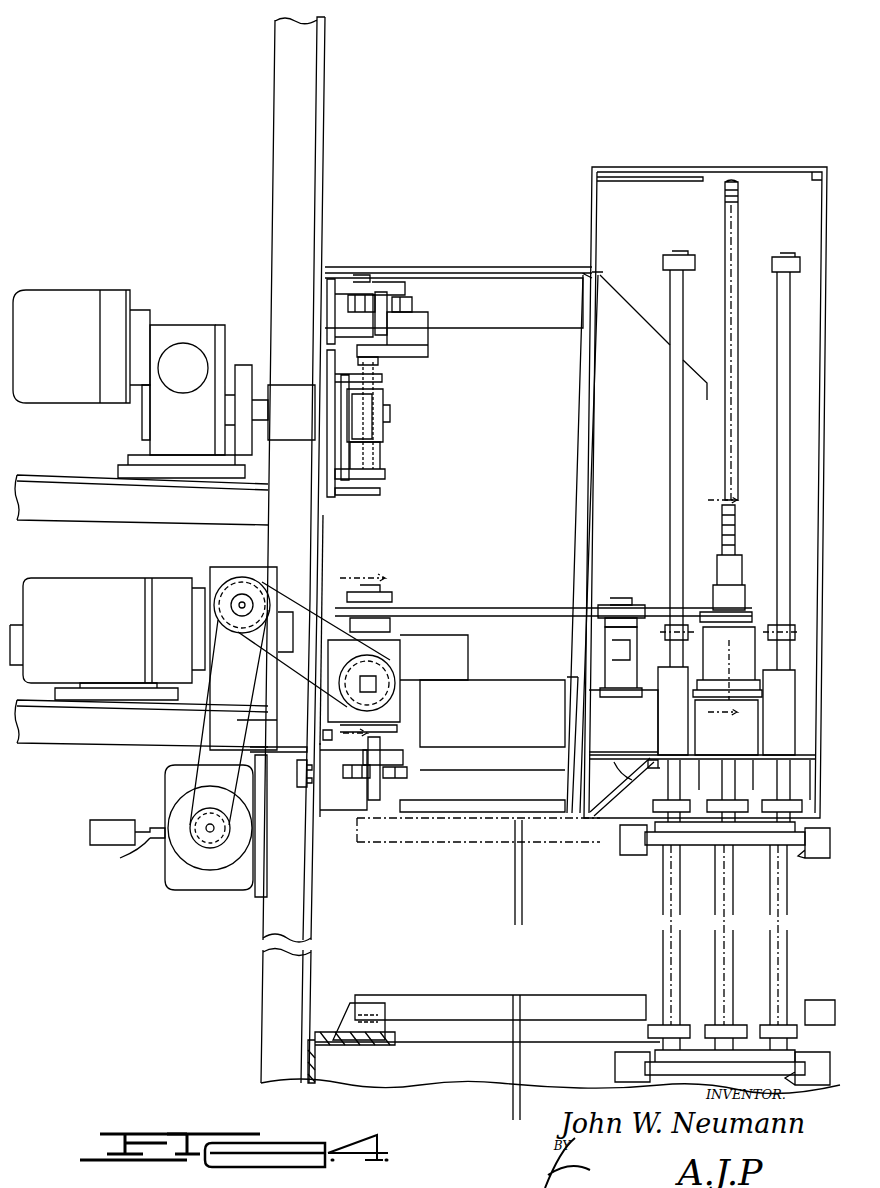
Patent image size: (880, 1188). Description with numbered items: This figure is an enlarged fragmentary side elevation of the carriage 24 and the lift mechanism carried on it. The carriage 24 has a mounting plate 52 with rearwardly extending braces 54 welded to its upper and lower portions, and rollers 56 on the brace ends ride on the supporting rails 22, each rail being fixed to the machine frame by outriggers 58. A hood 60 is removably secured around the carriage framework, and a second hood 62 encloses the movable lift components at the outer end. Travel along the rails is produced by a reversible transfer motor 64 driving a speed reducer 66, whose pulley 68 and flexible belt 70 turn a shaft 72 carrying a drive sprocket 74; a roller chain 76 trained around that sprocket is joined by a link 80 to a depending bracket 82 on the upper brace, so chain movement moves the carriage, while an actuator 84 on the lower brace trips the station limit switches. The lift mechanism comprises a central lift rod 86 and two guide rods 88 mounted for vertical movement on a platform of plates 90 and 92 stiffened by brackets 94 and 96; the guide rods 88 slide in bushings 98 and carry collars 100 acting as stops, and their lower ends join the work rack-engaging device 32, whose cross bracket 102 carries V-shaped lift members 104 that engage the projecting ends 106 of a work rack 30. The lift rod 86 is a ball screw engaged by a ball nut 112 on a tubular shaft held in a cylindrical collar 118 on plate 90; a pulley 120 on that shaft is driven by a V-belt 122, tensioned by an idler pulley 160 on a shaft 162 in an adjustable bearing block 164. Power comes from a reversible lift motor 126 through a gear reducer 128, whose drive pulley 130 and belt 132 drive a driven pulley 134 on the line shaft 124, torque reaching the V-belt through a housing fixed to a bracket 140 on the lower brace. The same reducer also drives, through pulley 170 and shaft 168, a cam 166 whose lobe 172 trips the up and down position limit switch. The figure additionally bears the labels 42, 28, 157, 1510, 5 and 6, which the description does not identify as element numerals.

The column 42 is at (305, 87).
The second hood 62 is at (753, 167).
The hood 60 is at (525, 272).
The carriage 24 is at (473, 258).
The mounting plate 52 is at (580, 490).
The braces 54 is at (522, 365).
The reversible transfer motor 64 is at (70, 300).
The speed reducer 66 is at (175, 415).
The pulley 68 is at (245, 365).
The flexible belt 70 is at (291, 412).
The outriggers 58 is at (340, 325).
The rollers 56 is at (360, 298).
The supporting rails 22 is at (390, 322).
The depending bracket 82 is at (430, 352).
The link 80 is at (380, 365).
The shaft 72 is at (390, 412).
The drive sprocket 74 is at (385, 450).
The roller chain 76 is at (370, 479).
The central lift rod 86 is at (740, 200).
The collars 100 is at (690, 255).
The bracket 94 is at (615, 295).
The guide rods 88 is at (670, 390).
The ball nut 112 is at (725, 570).
The section line 6 is at (737, 612).
The pulley 120 is at (752, 612).
The cylindrical collar 118 is at (745, 655).
The shaft 162 is at (620, 598).
The idler pulley 160 is at (598, 623).
The bearing block 164 is at (618, 652).
The upper plate 90 is at (603, 700).
The bushings 98 is at (770, 740).
The plate 92 is at (642, 776).
The bracket 96 is at (598, 800).
The cross bracket 102 is at (700, 830).
The V-shaped lift members 104 is at (615, 845).
The inwardly projecting ends 106 is at (525, 890).
The work rack-engaging device 32 is at (640, 845).
The work rack 30 is at (470, 860).
The carriage 28 is at (350, 1003).
The reversible lift motor 126 is at (55, 595).
The platform 157 is at (265, 727).
The gear reducer 128 is at (215, 570).
The drive pulley 130 is at (240, 590).
The belt 132 is at (290, 600).
The driven pulley 134 is at (400, 670).
The line shaft 124 is at (378, 690).
The bracket 140 is at (400, 618).
The V-belt 122 is at (525, 608).
The section line 5 is at (395, 651).
The actuator 84 is at (297, 775).
The switch 1510 is at (115, 825).
The lobe 172 is at (120, 858).
The cam 166 is at (185, 860).
The shaft 168 is at (208, 842).
The pulley 170 is at (212, 832).